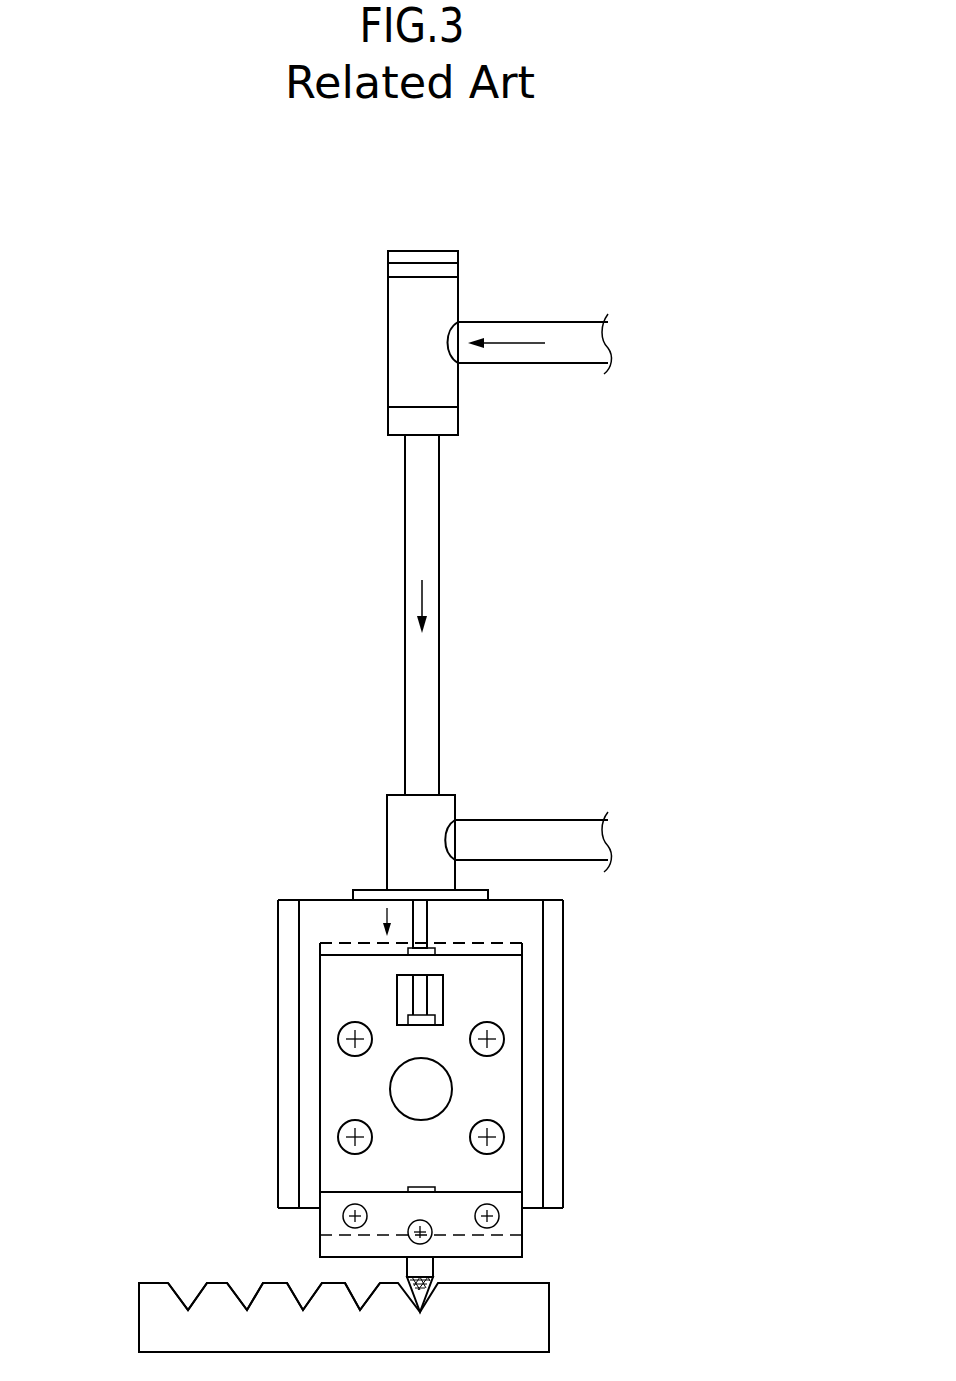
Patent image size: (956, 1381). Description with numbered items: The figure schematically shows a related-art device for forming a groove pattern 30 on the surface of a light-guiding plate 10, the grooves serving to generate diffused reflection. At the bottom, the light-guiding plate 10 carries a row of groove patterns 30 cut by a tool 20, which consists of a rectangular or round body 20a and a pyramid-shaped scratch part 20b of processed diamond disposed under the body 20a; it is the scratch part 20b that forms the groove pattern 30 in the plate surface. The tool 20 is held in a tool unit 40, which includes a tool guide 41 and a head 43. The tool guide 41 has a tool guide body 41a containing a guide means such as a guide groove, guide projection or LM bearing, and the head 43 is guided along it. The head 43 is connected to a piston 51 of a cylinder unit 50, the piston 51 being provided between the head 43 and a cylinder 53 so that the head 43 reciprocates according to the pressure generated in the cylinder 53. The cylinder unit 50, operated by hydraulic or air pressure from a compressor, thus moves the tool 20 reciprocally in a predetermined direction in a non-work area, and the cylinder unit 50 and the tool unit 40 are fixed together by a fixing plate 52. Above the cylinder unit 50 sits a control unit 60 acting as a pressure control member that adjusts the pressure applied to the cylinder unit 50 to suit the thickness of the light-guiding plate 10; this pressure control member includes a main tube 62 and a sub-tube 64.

The light-guiding plate 10 is at (139, 1318).
The tool 20 is at (553, 1284).
The body 20a is at (427, 1267).
The scratch part 20b is at (433, 1290).
The groove pattern 30 is at (248, 1290).
The tool unit 40 is at (447, 1078).
The tool guide 41 is at (535, 1002).
The tool guide body 41a is at (563, 1055).
The head 43 is at (337, 1085).
The cylinder unit 50 is at (572, 503).
The piston 51 is at (427, 918).
The fixing plate 52 is at (366, 890).
The cylinder 53 is at (438, 553).
The control unit 60 is at (505, 280).
The main tube 62 is at (551, 364).
The sub-tube 64 is at (608, 843).